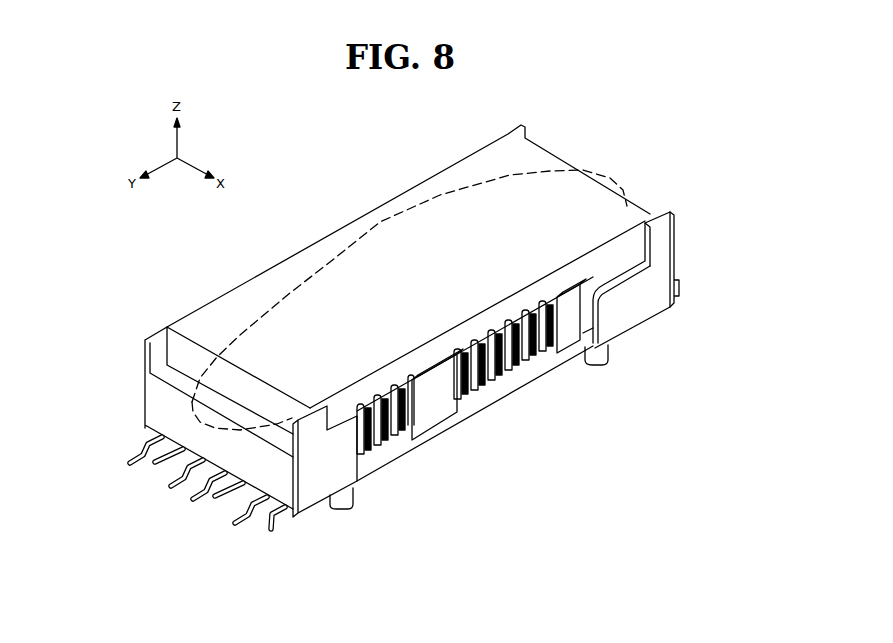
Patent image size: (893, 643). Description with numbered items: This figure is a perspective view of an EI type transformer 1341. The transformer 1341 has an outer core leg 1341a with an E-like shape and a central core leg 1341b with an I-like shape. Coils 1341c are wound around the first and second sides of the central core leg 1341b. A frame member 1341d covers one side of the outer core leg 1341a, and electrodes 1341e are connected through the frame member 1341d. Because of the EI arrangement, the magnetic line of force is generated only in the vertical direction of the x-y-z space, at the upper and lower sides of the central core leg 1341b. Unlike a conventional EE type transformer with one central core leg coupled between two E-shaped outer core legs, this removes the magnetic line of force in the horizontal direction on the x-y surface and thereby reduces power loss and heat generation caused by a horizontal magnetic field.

The EI type transformer 1341 is at (297, 102).
The outer core leg 1341a is at (452, 189).
The central core leg 1341b is at (507, 391).
The coils 1341c is at (526, 368).
The frame member 1341d is at (315, 498).
The electrodes 1341e is at (277, 524).